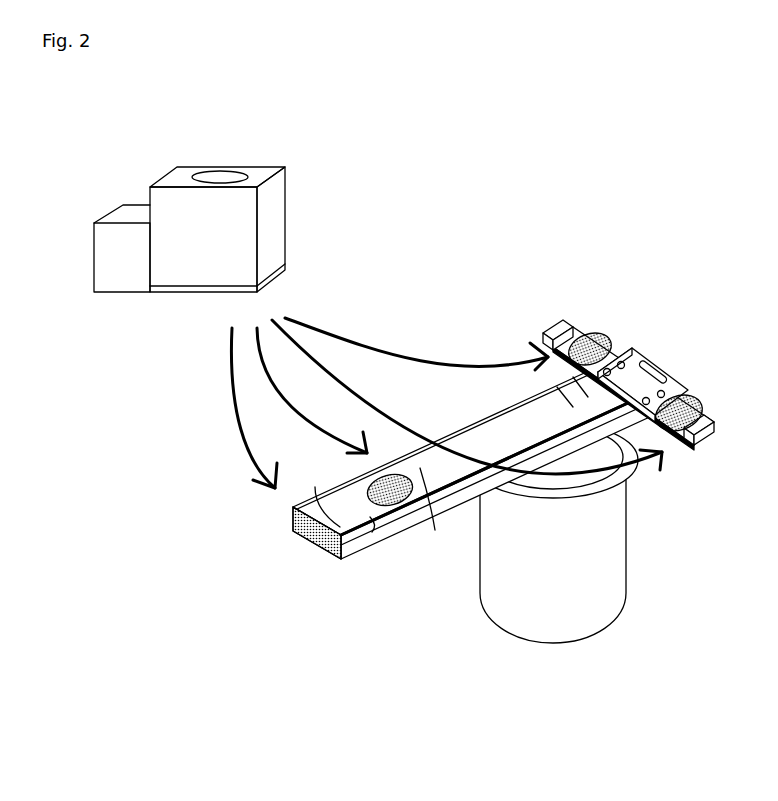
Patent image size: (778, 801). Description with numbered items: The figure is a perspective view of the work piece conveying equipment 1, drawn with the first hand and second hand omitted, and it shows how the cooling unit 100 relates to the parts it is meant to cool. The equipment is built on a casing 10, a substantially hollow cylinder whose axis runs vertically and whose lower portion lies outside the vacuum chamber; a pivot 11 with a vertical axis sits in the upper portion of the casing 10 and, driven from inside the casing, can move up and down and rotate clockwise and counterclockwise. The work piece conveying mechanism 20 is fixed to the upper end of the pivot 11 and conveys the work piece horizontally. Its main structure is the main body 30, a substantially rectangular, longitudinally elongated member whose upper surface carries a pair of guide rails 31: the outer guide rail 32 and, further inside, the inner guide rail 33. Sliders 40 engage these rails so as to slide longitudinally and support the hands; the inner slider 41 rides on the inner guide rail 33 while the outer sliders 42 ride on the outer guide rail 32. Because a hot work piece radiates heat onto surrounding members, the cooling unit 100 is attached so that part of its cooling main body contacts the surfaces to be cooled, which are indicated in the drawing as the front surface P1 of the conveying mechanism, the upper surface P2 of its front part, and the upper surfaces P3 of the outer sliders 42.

The work piece conveying equipment 1 is at (504, 472).
The cooling unit 100 is at (237, 130).
The casing 10 is at (545, 578).
The pivot 11 is at (597, 458).
The work piece conveying mechanism 20 is at (464, 394).
The main body 30 is at (613, 397).
The guide rails 31 is at (503, 482).
The outer guide rail 32 is at (372, 532).
The inner guide rail 33 is at (450, 509).
The sliders 40 is at (613, 397).
The inner slider 41 is at (667, 372).
The outer sliders 42 is at (546, 325).
The to-be-cooled surface P1 is at (290, 542).
The to-be-cooled surface P2 is at (352, 477).
The to-be-cooled surface P3 is at (620, 338).